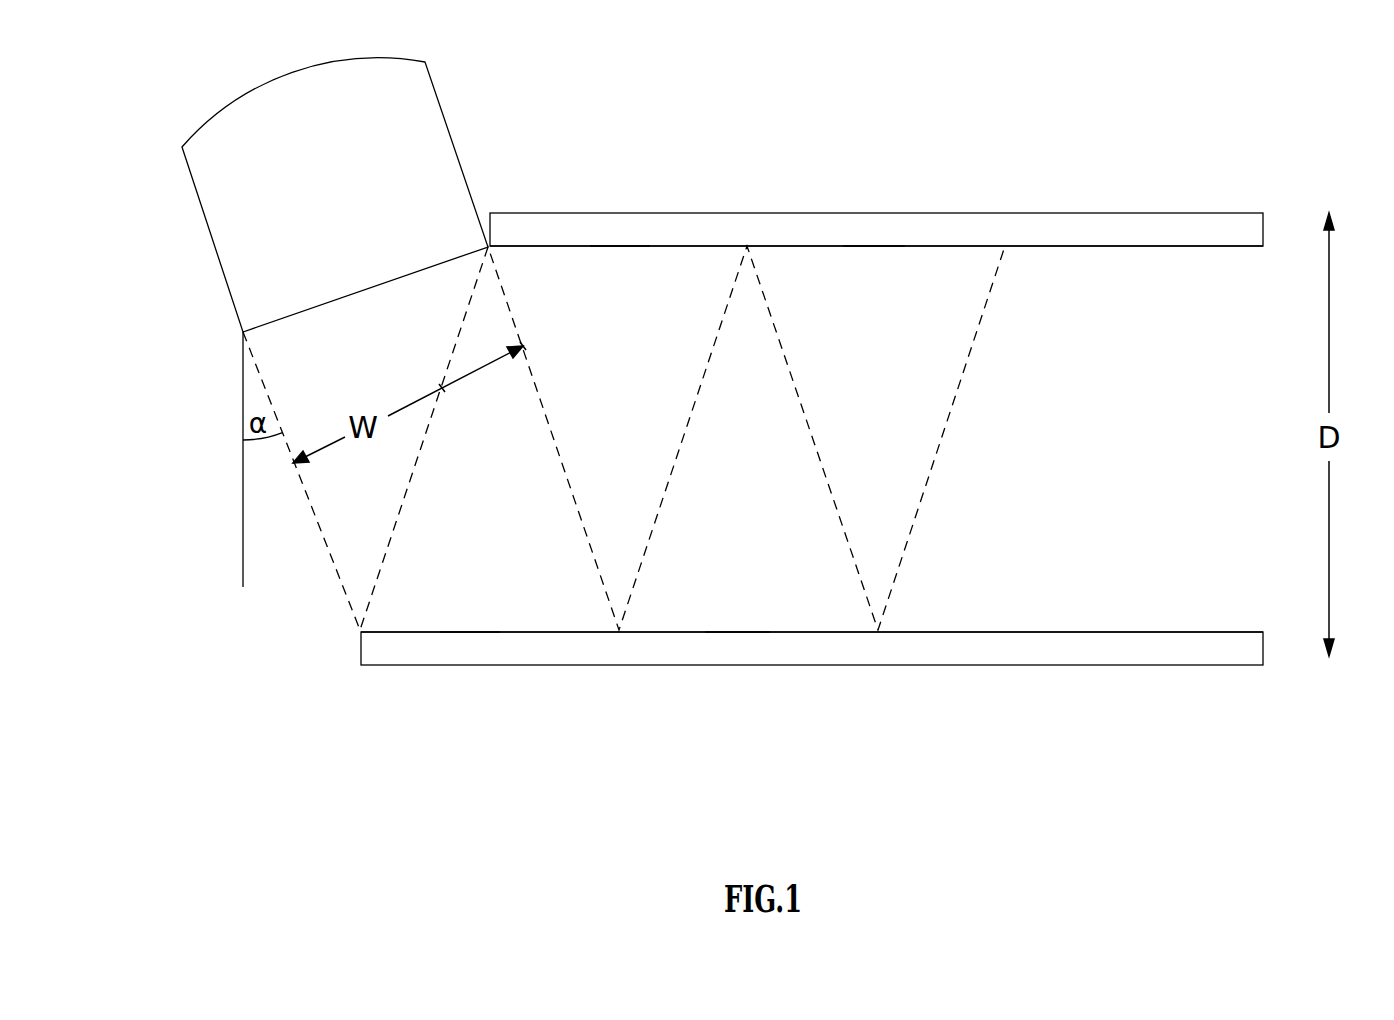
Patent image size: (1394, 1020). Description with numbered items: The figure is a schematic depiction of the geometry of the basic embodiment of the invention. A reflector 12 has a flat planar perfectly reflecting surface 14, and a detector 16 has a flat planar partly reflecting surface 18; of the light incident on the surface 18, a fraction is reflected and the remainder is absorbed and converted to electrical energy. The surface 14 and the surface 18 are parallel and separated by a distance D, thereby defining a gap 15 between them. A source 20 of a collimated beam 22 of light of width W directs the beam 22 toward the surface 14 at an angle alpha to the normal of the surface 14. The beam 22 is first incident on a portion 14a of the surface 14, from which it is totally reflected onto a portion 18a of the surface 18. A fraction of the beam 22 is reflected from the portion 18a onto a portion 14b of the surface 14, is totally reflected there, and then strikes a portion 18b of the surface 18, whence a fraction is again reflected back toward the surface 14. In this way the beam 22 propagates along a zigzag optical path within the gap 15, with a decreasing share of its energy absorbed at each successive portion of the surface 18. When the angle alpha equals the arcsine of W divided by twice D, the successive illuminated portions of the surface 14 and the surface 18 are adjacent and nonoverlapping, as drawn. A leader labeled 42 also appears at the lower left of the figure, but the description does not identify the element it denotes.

The reflector 12 is at (1045, 645).
The perfectly reflecting surface 14 is at (1105, 633).
The portion of surface 14 14a is at (443, 632).
The portion of surface 14 14b is at (710, 632).
The gap 15 is at (1041, 455).
The detector 16 is at (1253, 229).
The partly reflecting surface 18 is at (1105, 246).
The portion of surface 18 18a is at (595, 246).
The portion of surface 18 18b is at (847, 246).
The source 20 is at (315, 198).
The collimated beam 22 is at (363, 528).
The inspection system 42 is at (255, 800).